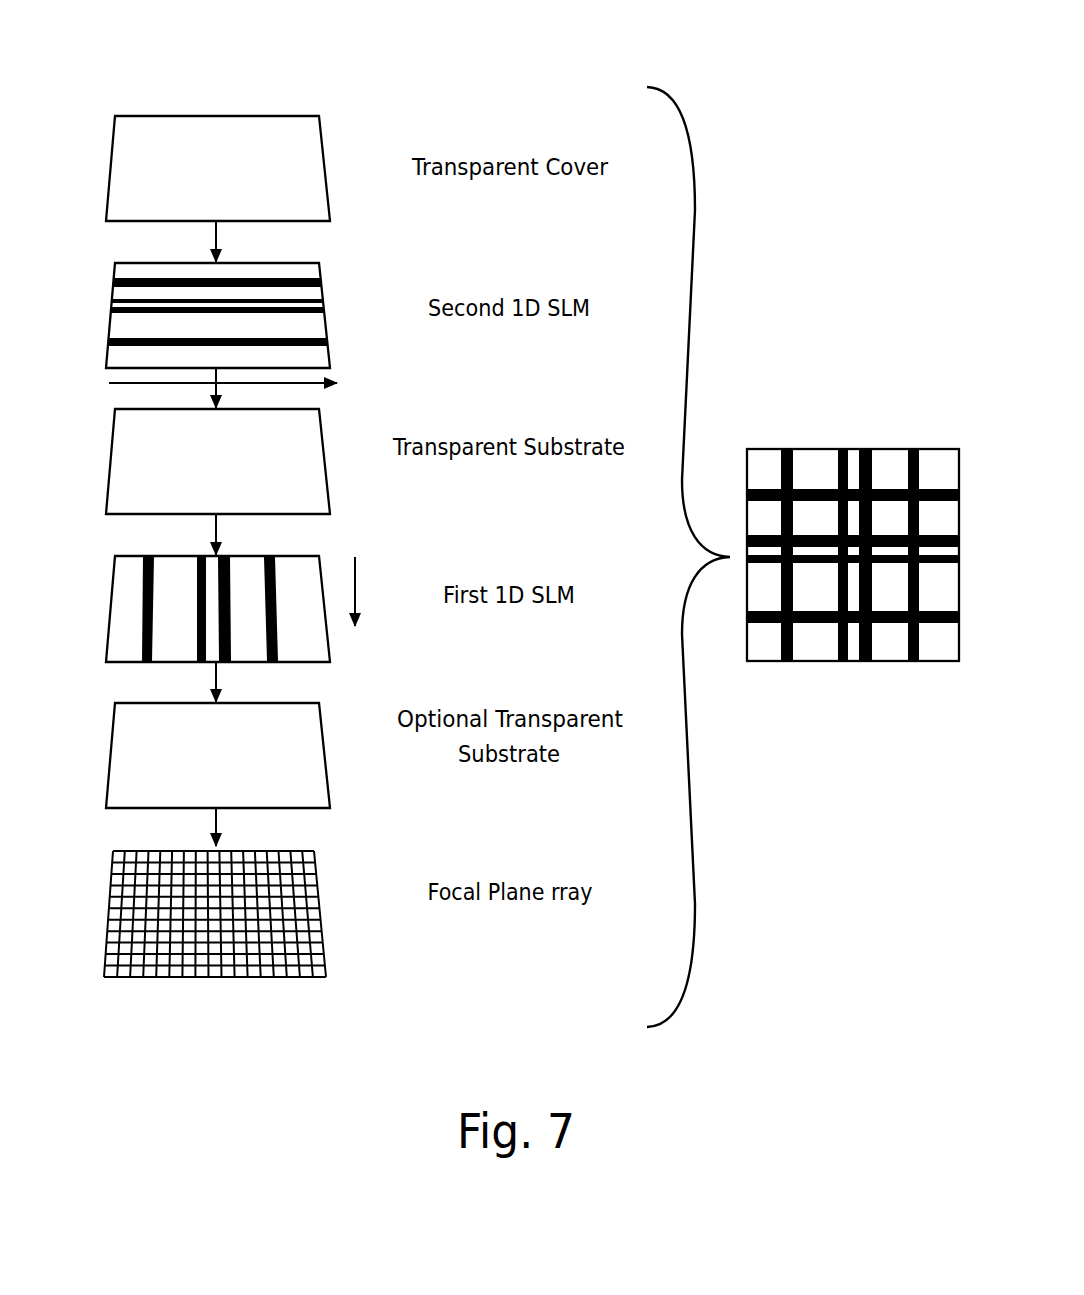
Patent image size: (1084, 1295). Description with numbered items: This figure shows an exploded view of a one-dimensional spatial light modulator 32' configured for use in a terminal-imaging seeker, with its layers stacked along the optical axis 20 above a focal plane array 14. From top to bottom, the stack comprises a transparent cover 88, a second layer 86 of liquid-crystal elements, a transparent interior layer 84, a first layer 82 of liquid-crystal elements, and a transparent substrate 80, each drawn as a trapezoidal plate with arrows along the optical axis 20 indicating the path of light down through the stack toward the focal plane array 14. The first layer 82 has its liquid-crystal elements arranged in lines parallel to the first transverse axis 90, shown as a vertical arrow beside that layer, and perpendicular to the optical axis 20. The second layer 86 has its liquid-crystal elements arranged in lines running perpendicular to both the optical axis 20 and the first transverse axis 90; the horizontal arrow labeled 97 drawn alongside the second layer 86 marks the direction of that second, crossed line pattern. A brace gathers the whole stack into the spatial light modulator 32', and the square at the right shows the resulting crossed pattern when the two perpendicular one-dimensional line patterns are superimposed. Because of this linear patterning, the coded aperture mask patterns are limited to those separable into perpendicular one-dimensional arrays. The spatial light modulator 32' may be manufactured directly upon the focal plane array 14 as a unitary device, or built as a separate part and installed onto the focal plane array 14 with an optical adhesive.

The spatial light modulator 32' is at (672, 525).
The transparent cover 88 is at (108, 168).
The second layer of liquid-crystal elements 86 is at (108, 311).
The second SLM modulation direction 97 is at (292, 384).
The transparent interior layer 84 is at (108, 459).
The first layer of liquid-crystal elements 82 is at (108, 609).
The first transverse axis 90 is at (357, 586).
The transparent substrate 80 is at (108, 753).
The optical axis 20 is at (217, 826).
The focal plane array 14 is at (276, 983).